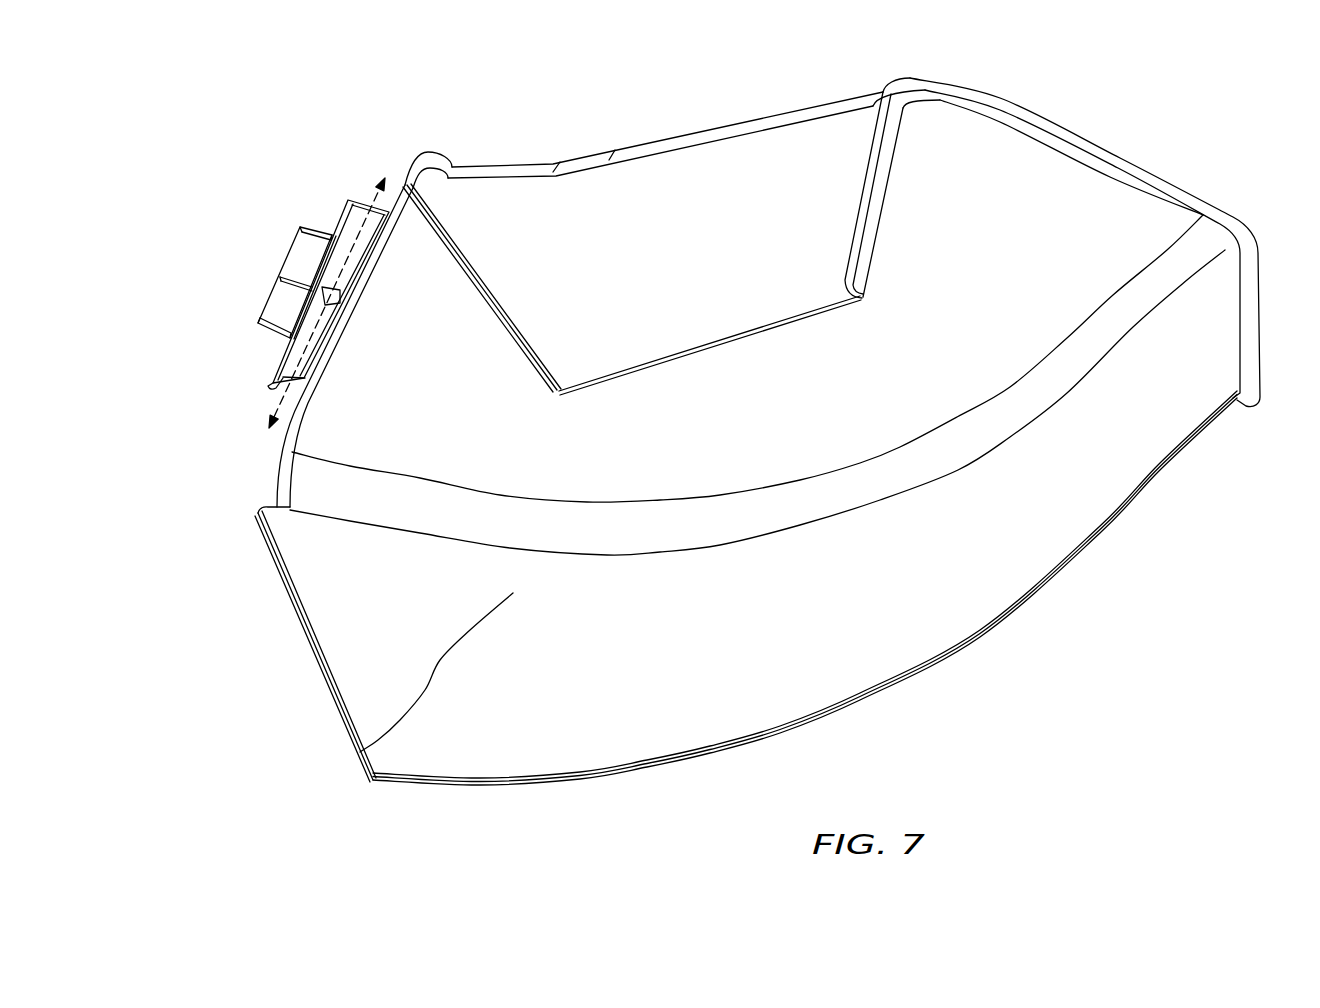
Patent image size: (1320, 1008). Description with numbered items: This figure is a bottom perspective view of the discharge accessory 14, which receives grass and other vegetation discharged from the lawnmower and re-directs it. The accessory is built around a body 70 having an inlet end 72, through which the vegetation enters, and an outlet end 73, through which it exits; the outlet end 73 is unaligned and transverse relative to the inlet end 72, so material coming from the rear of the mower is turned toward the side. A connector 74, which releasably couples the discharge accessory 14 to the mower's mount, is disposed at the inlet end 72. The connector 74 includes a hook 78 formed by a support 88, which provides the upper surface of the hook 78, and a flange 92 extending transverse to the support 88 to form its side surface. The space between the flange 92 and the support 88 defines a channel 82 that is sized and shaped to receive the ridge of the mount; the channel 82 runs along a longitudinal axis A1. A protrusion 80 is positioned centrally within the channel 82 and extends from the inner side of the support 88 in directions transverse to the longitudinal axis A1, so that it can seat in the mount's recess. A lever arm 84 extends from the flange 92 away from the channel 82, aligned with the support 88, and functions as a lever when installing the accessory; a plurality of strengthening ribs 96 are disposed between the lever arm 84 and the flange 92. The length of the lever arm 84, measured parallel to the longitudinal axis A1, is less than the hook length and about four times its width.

The discharge accessory 14 is at (1028, 643).
The body 70 is at (360, 752).
The inlet end 72 is at (272, 669).
The outlet end 73 is at (1203, 161).
The connector 74 is at (241, 291).
The hook 78 is at (296, 289).
The protrusion 80 is at (279, 276).
The channel 82 is at (363, 246).
The lever arm 84 is at (295, 260).
The support 88 is at (358, 199).
The flange 92 is at (272, 383).
The strengthening ribs 96 is at (298, 229).
The longitudinal axis A1 is at (289, 384).